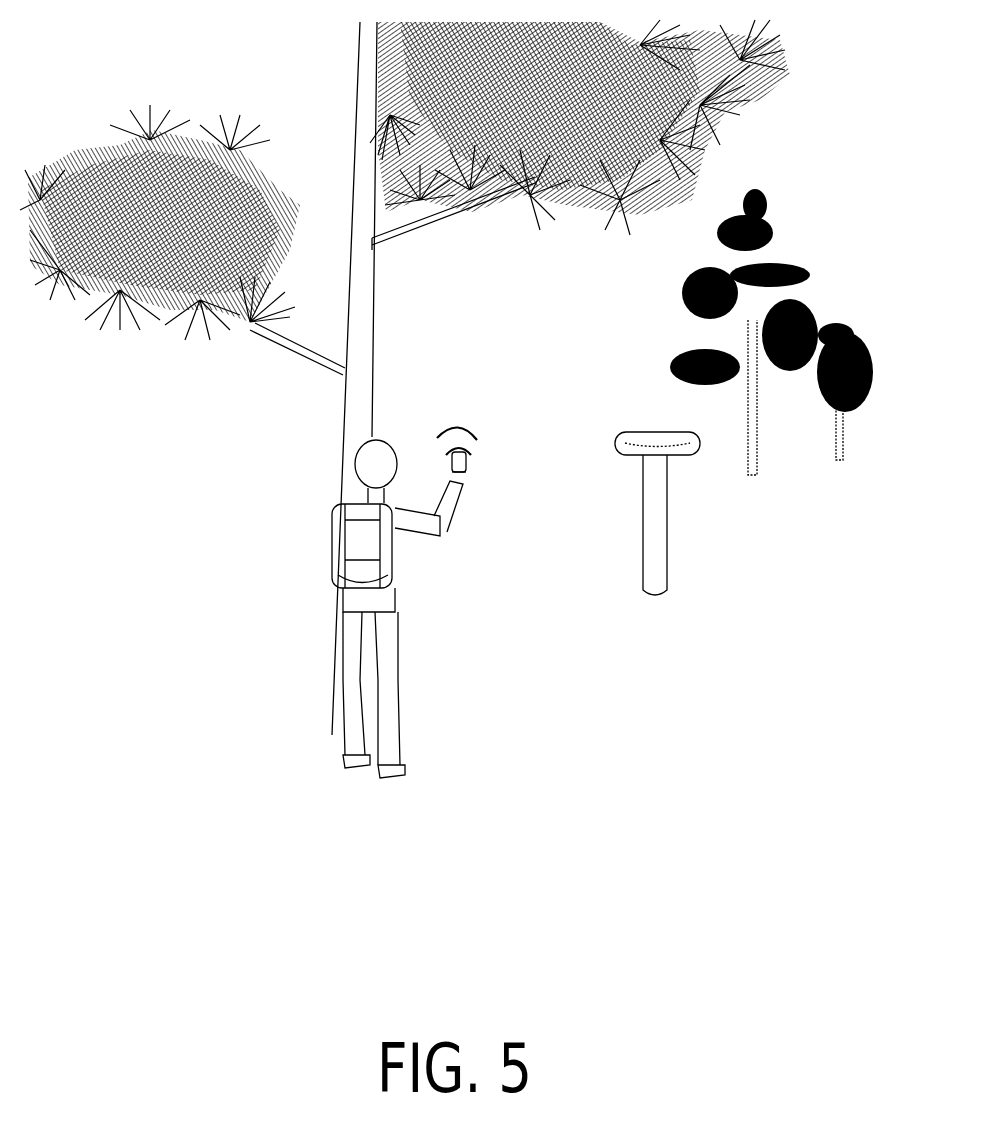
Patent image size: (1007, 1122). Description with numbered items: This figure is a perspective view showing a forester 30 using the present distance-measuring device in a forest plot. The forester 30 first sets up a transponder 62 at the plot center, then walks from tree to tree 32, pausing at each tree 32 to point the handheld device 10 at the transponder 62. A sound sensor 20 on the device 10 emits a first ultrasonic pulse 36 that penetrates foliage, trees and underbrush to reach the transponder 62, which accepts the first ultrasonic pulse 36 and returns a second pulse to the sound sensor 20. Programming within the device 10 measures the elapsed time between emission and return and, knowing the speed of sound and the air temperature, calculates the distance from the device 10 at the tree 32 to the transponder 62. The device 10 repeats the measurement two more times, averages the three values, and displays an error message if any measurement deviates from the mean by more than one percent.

The device 10 is at (502, 512).
The sound sensor 20 is at (509, 465).
The forester 30 is at (324, 609).
The tree 32 is at (364, 378).
The first ultrasonic pulse 36 is at (495, 393).
The transponder 62 is at (710, 513).